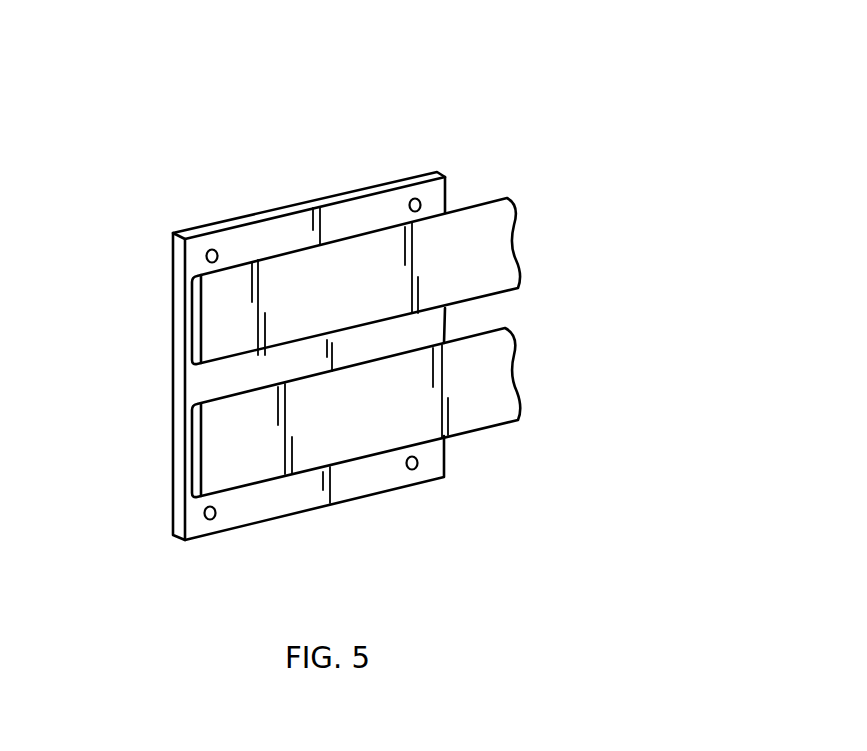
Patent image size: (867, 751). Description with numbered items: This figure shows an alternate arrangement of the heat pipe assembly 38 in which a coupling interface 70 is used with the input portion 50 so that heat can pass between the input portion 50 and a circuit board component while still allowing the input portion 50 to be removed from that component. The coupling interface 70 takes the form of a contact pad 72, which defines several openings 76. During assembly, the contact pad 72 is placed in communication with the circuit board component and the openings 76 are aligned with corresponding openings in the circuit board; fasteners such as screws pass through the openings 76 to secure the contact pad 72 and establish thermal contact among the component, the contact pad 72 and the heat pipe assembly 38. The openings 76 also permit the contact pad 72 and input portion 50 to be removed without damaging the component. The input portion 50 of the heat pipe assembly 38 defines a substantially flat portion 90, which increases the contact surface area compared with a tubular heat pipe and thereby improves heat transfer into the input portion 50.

The coupling interface 70 is at (420, 84).
The contact pad 72 is at (362, 189).
The substantially flat portion 90 is at (173, 463).
The openings 76 is at (207, 250).
The input portion 50 is at (278, 230).
The heat pipe assembly 38 is at (478, 492).